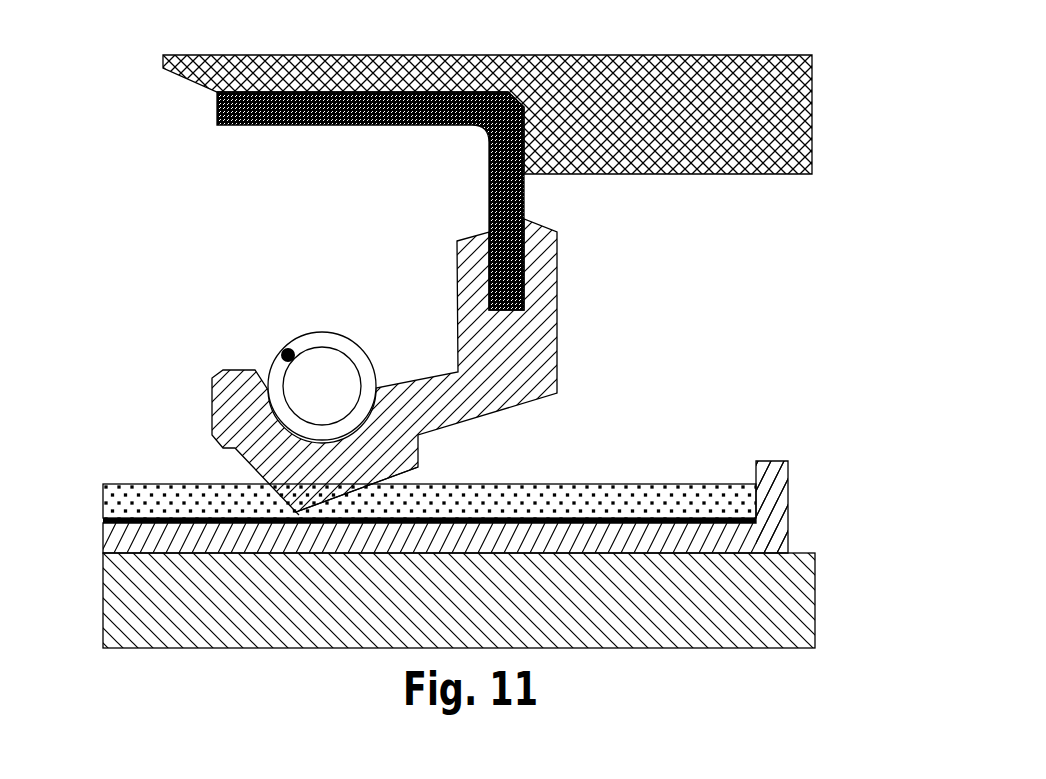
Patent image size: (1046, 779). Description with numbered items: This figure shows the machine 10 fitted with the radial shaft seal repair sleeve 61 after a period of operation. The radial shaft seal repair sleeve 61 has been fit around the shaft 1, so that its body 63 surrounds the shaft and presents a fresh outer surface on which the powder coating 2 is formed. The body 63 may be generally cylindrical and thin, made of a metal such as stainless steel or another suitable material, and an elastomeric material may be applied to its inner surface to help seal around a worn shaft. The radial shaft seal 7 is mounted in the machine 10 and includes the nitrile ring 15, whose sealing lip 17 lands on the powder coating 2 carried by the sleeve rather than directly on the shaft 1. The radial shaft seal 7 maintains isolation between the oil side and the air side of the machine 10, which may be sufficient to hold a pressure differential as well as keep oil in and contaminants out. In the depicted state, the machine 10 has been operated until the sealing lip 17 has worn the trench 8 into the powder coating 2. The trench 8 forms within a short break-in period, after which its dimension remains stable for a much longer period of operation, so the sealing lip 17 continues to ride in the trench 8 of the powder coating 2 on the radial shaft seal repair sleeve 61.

The shaft 1 is at (795, 605).
The powder coating 2 is at (713, 492).
The radial shaft seal 7 is at (374, 365).
The trench 8 is at (292, 513).
The machine 10 is at (120, 47).
The nitrile ring 15 is at (532, 350).
The sealing lip 17 is at (297, 512).
The radial shaft seal repair sleeve 61 is at (797, 525).
The body 63 is at (763, 503).